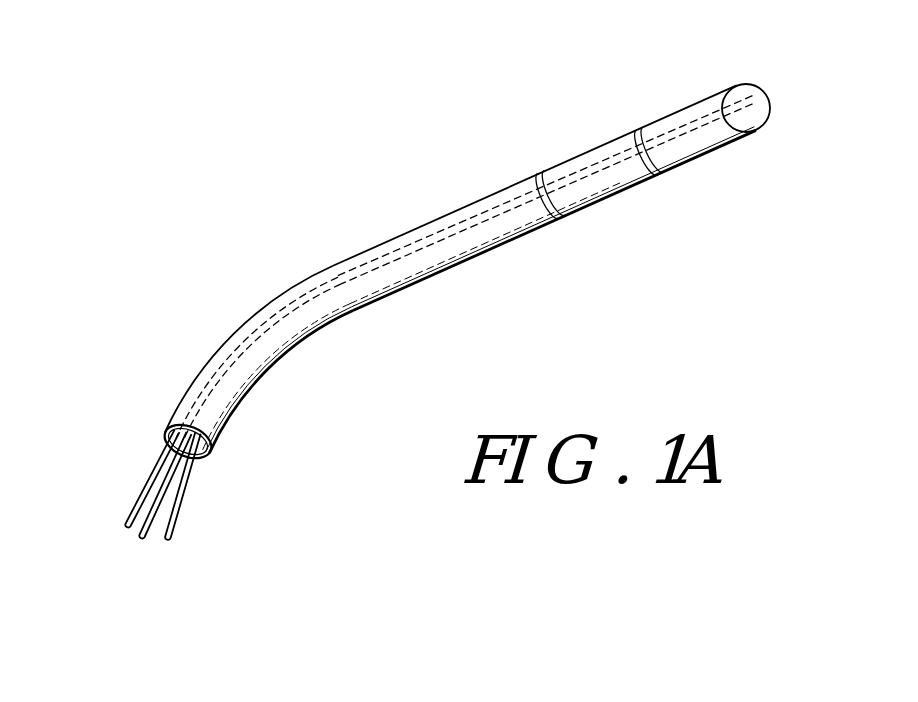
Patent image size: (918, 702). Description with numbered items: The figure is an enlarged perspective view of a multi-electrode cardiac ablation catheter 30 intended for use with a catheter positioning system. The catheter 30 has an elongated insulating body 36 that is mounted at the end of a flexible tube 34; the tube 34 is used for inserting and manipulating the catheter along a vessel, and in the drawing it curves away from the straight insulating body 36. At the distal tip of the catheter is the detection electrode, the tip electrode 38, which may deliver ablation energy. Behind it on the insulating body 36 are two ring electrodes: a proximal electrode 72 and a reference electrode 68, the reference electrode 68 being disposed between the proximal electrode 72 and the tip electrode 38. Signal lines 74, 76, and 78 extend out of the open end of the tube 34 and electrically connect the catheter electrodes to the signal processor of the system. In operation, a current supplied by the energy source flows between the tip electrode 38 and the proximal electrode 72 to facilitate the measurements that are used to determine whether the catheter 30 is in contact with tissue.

The cardiac ablation catheter 30 is at (610, 117).
The flexible tube 34 is at (287, 290).
The elongated insulating body 36 is at (462, 221).
The tip electrode 38 is at (752, 98).
The reference electrode 68 is at (660, 172).
The proximal electrode 72 is at (561, 213).
The signal line 74 is at (132, 511).
The signal line 76 is at (146, 540).
The signal line 78 is at (178, 517).